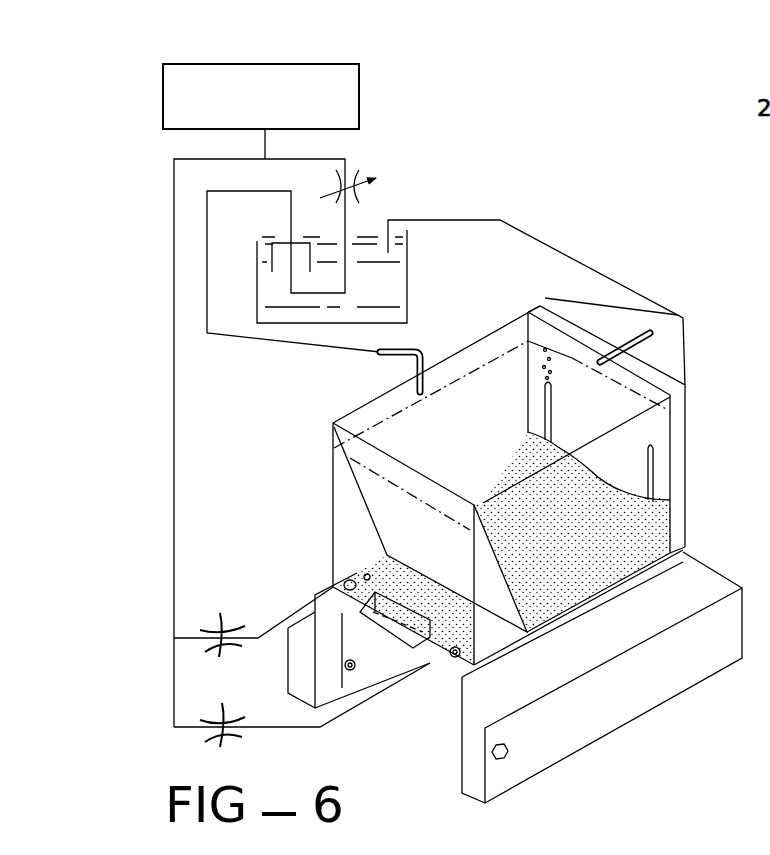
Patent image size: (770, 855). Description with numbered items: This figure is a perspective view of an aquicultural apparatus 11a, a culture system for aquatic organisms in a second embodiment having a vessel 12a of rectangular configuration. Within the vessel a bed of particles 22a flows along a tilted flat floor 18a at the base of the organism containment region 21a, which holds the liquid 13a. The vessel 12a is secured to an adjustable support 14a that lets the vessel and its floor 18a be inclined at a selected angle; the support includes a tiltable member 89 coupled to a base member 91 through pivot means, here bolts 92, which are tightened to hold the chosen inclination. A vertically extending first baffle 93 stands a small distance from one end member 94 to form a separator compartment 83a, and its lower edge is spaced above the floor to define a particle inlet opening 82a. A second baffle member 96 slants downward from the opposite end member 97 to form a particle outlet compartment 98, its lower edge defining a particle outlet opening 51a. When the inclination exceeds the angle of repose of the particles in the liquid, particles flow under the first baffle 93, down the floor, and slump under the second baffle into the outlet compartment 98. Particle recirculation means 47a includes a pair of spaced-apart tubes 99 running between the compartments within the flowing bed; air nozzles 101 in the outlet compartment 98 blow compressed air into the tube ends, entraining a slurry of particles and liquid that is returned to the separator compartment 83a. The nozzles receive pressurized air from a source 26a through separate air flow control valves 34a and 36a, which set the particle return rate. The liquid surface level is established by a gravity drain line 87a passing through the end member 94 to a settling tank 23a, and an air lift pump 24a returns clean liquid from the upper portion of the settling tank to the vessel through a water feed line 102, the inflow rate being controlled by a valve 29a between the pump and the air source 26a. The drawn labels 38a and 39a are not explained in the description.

The aquicultural apparatus 11a is at (581, 174).
The vessel 12a is at (324, 410).
The liquid 13a is at (400, 432).
The adjustable support 14a is at (649, 702).
The tilted flat floor 18a is at (548, 632).
The organism containment region 21a is at (492, 393).
The bed of particles 22a is at (570, 549).
The settling tank 23a is at (410, 258).
The air lift pump 24a is at (270, 255).
The pressurized air source 26a is at (359, 96).
The valve 29a is at (357, 200).
The air flow control valve 34a is at (223, 632).
The air flow control valve 36a is at (222, 727).
The collection tray 38a is at (408, 592).
The tank wall 39a is at (689, 530).
The particle recirculation means 47a is at (680, 551).
The particle outlet opening 51a is at (420, 600).
The particle inlet opening 82a is at (625, 540).
The separator compartment 83a is at (568, 325).
The gravity drain line 87a is at (650, 338).
The tiltable member 89 is at (663, 593).
The base member 91 is at (683, 685).
The bolts 92 is at (508, 755).
The first baffle 93 is at (665, 373).
The end member 94 is at (553, 318).
The second baffle member 96 is at (368, 513).
The opposite end member 97 is at (350, 550).
The particle outlet compartment 98 is at (347, 484).
The tubes 99 is at (580, 575).
The air nozzles 101 is at (447, 657).
The water feed line 102 is at (410, 352).